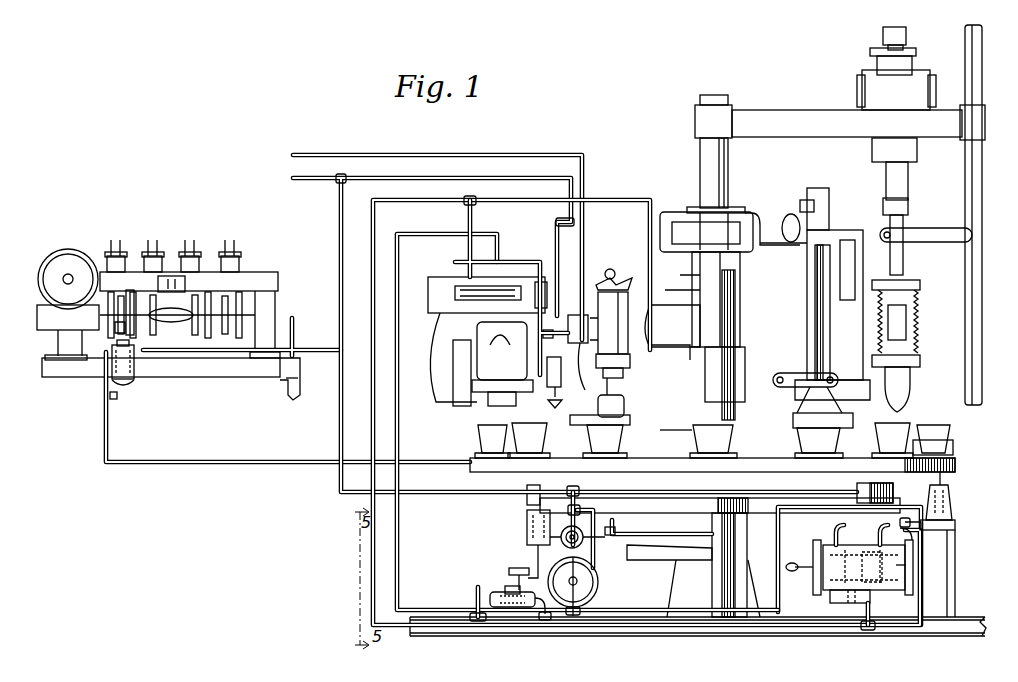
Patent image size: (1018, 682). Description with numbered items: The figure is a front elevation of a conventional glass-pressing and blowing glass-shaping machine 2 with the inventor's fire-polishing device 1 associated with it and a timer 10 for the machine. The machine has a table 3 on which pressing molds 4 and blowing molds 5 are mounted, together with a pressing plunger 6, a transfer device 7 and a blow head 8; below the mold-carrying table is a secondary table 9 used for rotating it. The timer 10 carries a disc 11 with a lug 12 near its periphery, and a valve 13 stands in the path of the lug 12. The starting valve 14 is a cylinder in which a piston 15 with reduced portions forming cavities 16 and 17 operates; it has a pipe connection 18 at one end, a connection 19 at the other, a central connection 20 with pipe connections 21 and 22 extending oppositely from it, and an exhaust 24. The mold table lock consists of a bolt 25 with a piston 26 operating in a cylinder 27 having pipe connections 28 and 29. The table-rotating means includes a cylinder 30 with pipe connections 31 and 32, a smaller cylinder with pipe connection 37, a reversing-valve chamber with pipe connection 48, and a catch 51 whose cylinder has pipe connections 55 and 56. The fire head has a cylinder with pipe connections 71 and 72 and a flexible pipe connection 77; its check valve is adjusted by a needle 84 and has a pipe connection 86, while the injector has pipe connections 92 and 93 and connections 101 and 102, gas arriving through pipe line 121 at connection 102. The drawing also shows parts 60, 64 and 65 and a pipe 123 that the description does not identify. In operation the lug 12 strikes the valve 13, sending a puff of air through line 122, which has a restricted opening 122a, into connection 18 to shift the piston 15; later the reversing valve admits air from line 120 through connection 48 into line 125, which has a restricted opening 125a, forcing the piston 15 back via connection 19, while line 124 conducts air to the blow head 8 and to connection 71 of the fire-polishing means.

The fire-polishing device 1 is at (612, 306).
The glass-shaping machine 2 is at (713, 130).
The table 3 is at (955, 462).
The pressing molds 4 is at (545, 436).
The blowing molds 5 is at (480, 441).
The pressing plunger 6 is at (912, 371).
The transfer device 7 is at (838, 277).
The blow head 8 is at (492, 349).
The secondary table 9 is at (895, 494).
The timer 10 is at (62, 372).
The disc 11 is at (128, 300).
The lug 12 is at (116, 322).
The valve 13 is at (112, 365).
The starting valve 14 is at (880, 596).
The piston 15 is at (882, 573).
The cavity 16 is at (913, 566).
The cavity 17 is at (835, 561).
The pipe connection 18 is at (803, 567).
The connection 19 is at (908, 569).
The connection 20 is at (855, 541).
The pipe connection 21 is at (832, 598).
The pipe connection 22 is at (880, 617).
The exhaust 24 is at (911, 519).
The bolt 25 is at (938, 481).
The piston 26 is at (950, 501).
The cylinder 27 is at (950, 518).
The pipe connection 28 is at (933, 502).
The pipe connection 29 is at (915, 531).
The cylinder 30 is at (598, 575).
The pipe connection 31 is at (585, 583).
The pipe connection 32 is at (557, 595).
The pipe connection 37 is at (585, 541).
The pipe connection 48 is at (578, 502).
The catch 51 is at (509, 569).
The pipe connection 55 is at (538, 615).
The pipe connection 56 is at (502, 603).
The bracket 60 is at (650, 340).
The lever 64 is at (613, 284).
The knob 65 is at (610, 270).
The pipe connection 71 is at (684, 359).
The pipe connection 72 is at (565, 390).
The flexible pipe connection 77 is at (583, 384).
The needle 84 is at (547, 410).
The pipe connection 86 is at (547, 381).
The pipe connection 92 is at (557, 354).
The pipe connection 93 is at (551, 330).
The pipe connection 101 is at (586, 319).
The pipe connection 102 is at (603, 325).
The line 120 is at (315, 181).
The pipe line 121 is at (432, 155).
The line 122 is at (232, 462).
The restricted opening 122a is at (117, 395).
The pipe 123 is at (426, 233).
The line 124 is at (474, 224).
The line 125 is at (690, 527).
The restricted opening 125a is at (627, 534).